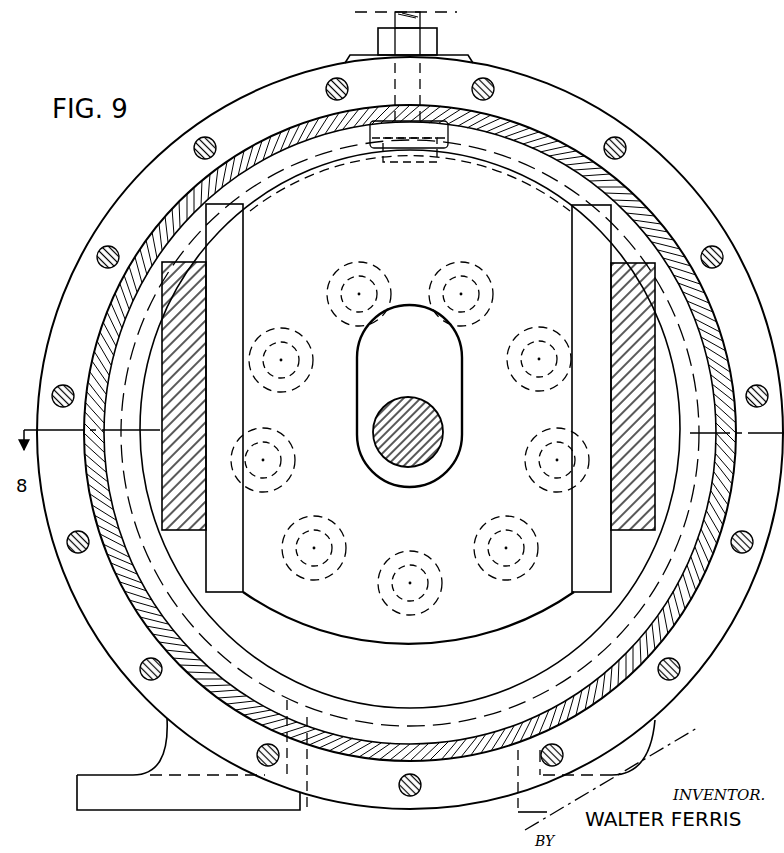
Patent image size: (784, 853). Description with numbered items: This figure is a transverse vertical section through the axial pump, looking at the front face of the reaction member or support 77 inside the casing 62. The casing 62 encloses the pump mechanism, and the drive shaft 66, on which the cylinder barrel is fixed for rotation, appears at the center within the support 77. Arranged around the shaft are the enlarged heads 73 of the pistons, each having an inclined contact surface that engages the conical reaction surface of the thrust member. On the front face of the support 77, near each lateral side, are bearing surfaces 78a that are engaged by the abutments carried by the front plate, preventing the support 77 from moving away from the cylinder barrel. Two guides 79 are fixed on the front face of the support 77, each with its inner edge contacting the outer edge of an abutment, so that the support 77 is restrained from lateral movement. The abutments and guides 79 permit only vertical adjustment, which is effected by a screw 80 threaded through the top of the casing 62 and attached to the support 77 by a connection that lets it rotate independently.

The casing 62 is at (562, 105).
The drive shaft 66 is at (418, 428).
The enlarged head 73 is at (284, 328).
The reaction member or support 77 is at (523, 625).
The bearing surfaces 78a is at (228, 268).
The guides 79 is at (190, 304).
The screw 80 is at (412, 15).